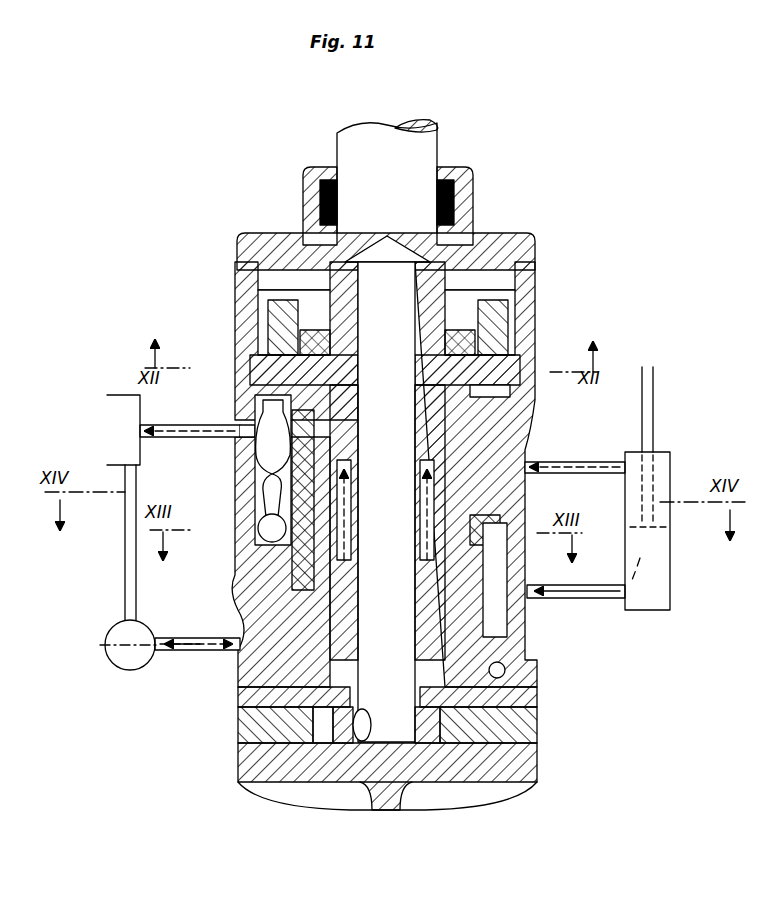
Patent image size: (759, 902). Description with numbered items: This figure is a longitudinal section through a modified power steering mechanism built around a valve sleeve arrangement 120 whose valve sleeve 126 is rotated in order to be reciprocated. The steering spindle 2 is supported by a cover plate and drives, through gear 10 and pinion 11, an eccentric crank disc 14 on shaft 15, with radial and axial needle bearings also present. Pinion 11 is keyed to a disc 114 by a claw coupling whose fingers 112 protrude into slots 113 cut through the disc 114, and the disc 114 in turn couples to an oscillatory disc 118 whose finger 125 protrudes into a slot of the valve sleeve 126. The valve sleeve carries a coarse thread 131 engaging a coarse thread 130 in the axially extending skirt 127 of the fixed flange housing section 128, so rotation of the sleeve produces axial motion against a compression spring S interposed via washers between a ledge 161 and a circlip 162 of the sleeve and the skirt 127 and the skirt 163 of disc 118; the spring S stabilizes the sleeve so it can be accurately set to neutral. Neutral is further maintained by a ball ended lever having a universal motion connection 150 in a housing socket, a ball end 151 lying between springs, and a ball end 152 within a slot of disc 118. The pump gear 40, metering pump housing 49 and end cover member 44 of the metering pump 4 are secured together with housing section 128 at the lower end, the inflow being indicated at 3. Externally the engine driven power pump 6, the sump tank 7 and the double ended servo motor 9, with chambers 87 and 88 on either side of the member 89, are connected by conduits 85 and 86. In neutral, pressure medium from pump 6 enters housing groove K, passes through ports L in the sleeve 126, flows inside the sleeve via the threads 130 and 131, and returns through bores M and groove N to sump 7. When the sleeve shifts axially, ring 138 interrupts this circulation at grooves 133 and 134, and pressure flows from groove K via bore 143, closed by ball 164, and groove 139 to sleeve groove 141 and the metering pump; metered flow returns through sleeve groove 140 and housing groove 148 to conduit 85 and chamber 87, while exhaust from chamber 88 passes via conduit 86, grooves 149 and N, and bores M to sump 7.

The steering spindle 2 is at (362, 162).
The inlet arrow 3 is at (192, 283).
The metering pump 4 is at (205, 741).
The engine driven power pump 6 is at (135, 690).
The sump tank 7 is at (127, 395).
The double ended servo motor 9 is at (632, 640).
The gear 10 is at (258, 310).
The pinion 11 is at (248, 256).
The eccentric crank disc 14 is at (272, 232).
The shaft 15 is at (387, 522).
The pump gear 40 is at (432, 738).
The end cover member 44 is at (252, 776).
The metering pump housing 49 is at (252, 726).
The conduit 85 is at (605, 603).
The conduit 86 is at (598, 462).
The chamber 87 is at (645, 600).
The cylinder chamber 88 is at (630, 488).
The piston 89 is at (636, 528).
The finger 112 is at (258, 336).
The slot 113 is at (338, 370).
The disc 114 is at (512, 352).
The oscillatory disc 118 is at (505, 395).
The valve sleeve arrangement 120 is at (196, 599).
The finger 125 is at (520, 426).
The valve sleeve 126 is at (258, 590).
The skirt 127 is at (418, 627).
The fixed flange housing section 128 is at (258, 762).
The coarse thread 130 is at (515, 643).
The coarse thread 131 is at (440, 506).
The groove 133 is at (242, 700).
The groove 134 is at (256, 607).
The ring 138 is at (530, 675).
The groove 139 is at (254, 522).
The sleeve groove 140 is at (256, 545).
The sleeve groove 141 is at (252, 478).
The bore 143 is at (522, 577).
The housing groove 148 is at (520, 612).
The groove 149 is at (520, 478).
The universal motion connection 150 is at (242, 428).
The ball end 151 is at (252, 500).
The ball end 152 is at (243, 372).
The ledge 161 is at (505, 565).
The circlip 162 is at (530, 462).
The skirt 163 is at (352, 410).
The ball 164 is at (537, 706).
The housing groove K is at (420, 676).
The ports L is at (418, 598).
The bores M is at (420, 462).
The groove N is at (422, 490).
The compression spring S is at (418, 535).